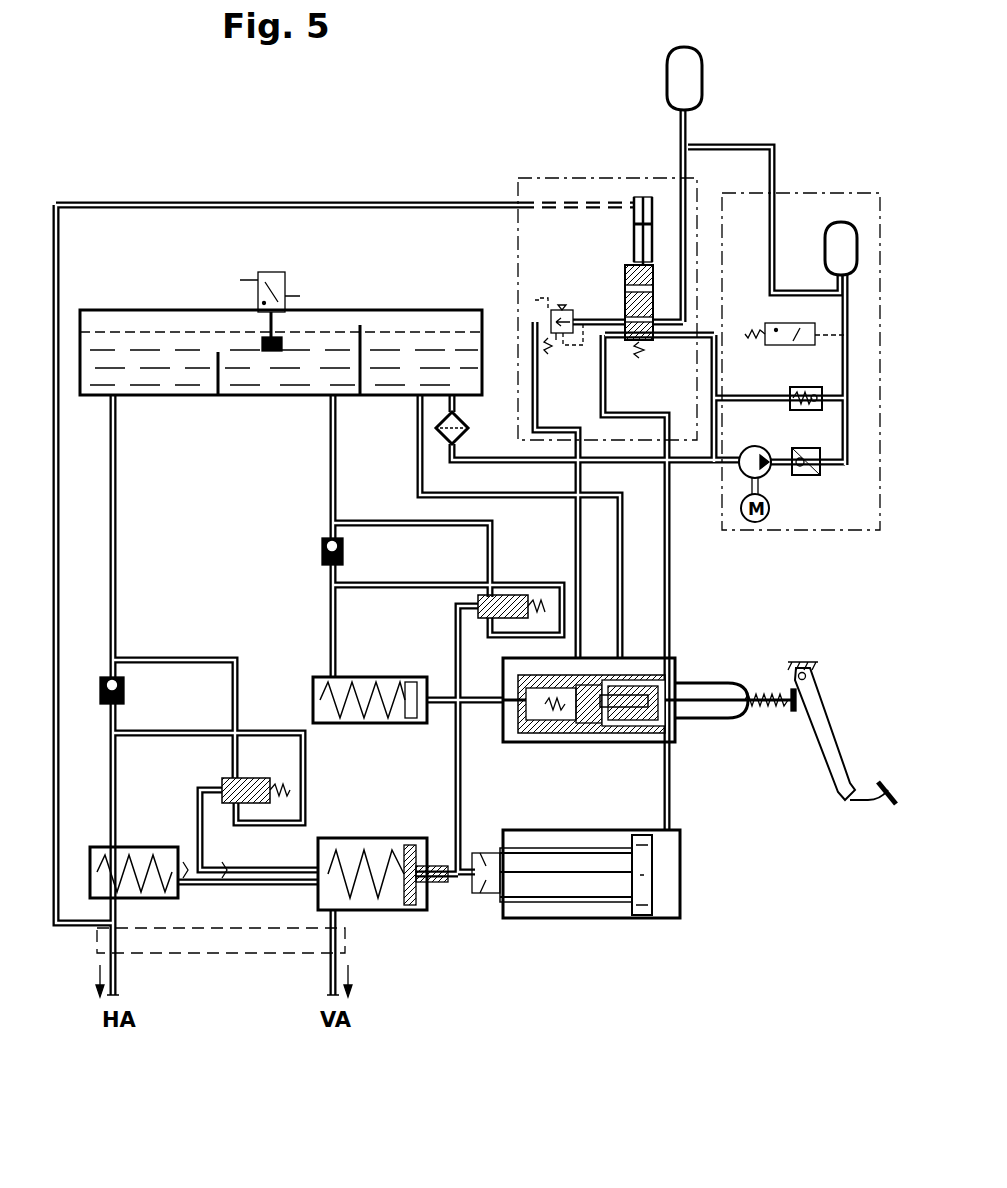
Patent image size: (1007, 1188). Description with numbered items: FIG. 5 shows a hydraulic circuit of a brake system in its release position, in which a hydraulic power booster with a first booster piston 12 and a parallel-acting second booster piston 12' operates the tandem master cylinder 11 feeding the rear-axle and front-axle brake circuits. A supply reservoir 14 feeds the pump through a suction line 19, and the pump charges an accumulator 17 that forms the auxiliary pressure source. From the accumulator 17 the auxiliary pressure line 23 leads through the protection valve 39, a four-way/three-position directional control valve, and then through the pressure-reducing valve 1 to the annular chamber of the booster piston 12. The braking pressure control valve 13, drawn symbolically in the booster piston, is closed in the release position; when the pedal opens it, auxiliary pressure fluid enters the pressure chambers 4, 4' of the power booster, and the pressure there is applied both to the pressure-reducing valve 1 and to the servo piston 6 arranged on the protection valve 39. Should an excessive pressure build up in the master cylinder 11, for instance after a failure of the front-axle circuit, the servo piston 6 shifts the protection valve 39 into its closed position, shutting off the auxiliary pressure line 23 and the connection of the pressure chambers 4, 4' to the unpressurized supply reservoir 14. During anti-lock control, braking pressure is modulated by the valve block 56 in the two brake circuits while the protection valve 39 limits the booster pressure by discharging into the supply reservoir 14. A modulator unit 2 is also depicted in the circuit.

The pressure-reducing valve 1 is at (576, 305).
The pressure modulator 2 is at (633, 200).
The pressure chamber 4 is at (730, 737).
The pressure chamber 4' is at (605, 874).
The servo piston 6 is at (633, 222).
The tandem master cylinder 11 is at (387, 838).
The first booster piston 12 is at (589, 672).
The second booster piston 12' is at (652, 907).
The braking pressure control valve 13 is at (590, 742).
The supply reservoir 14 is at (403, 330).
The accumulator 17 is at (695, 62).
The suction line 19 is at (500, 458).
The auxiliary pressure line 23 is at (680, 198).
The protection valve 39 is at (645, 345).
The valve block 56 is at (352, 945).